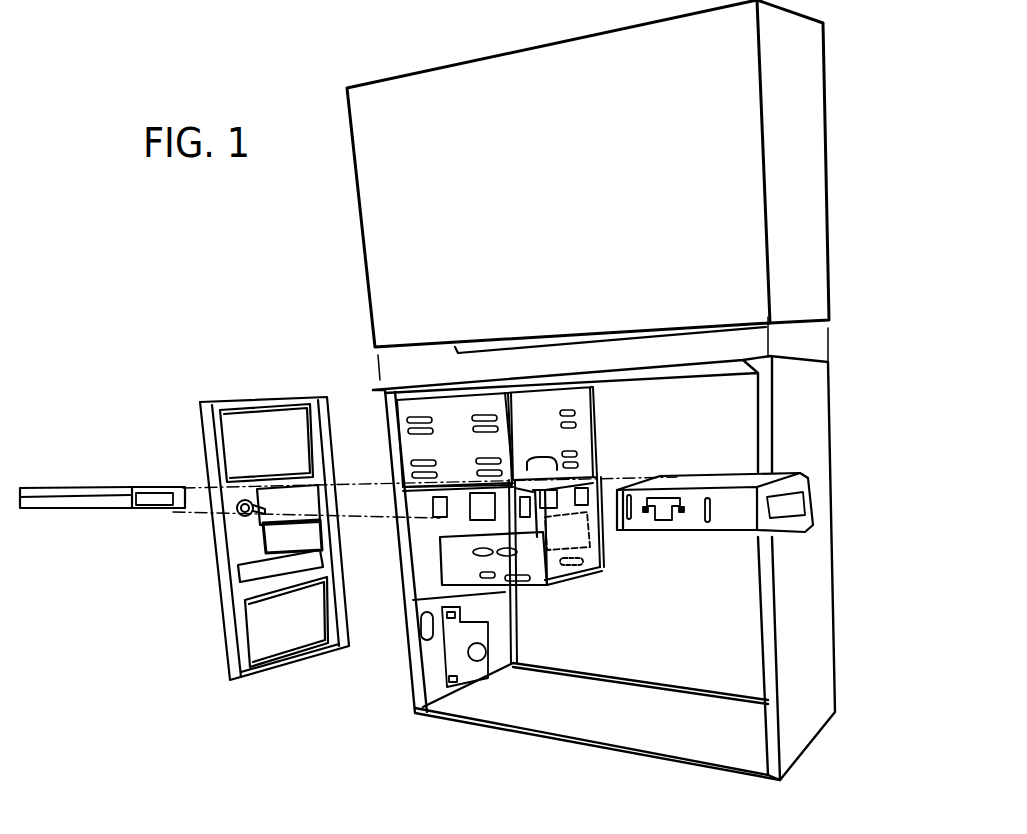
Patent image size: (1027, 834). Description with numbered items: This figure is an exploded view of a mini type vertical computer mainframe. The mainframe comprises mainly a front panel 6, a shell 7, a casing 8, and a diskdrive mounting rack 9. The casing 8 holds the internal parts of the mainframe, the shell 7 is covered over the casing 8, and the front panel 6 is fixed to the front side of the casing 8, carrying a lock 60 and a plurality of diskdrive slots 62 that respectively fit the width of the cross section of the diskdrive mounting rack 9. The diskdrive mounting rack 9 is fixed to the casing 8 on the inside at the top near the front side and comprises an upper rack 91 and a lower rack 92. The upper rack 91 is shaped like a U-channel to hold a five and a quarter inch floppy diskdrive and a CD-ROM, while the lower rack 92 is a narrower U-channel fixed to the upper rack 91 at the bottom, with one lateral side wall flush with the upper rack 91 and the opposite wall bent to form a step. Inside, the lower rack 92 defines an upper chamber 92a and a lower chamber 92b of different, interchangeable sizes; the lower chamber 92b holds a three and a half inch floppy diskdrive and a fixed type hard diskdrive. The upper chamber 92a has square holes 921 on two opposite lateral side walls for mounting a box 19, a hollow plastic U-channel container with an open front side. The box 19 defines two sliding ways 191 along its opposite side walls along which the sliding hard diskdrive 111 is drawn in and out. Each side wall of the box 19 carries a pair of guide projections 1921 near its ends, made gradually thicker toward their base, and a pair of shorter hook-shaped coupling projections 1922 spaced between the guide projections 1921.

The sliding hard diskdrive 111 is at (40, 493).
The front panel 6 is at (282, 678).
The lock 60 is at (238, 513).
The diskdrive slots 62 is at (290, 497).
The shell 7 is at (810, 186).
The casing 8 is at (565, 717).
The diskdrive mounting rack 9 is at (520, 595).
The upper rack 91 is at (408, 450).
The lower rack 92 is at (537, 573).
The upper chamber 92a is at (607, 483).
The lower chamber 92b is at (590, 560).
The square holes 921 is at (520, 518).
The box 19 is at (733, 480).
The sliding ways 191 is at (675, 480).
The guide projections 1921 is at (629, 494).
The hook-shaped coupling projections 1922 is at (672, 521).